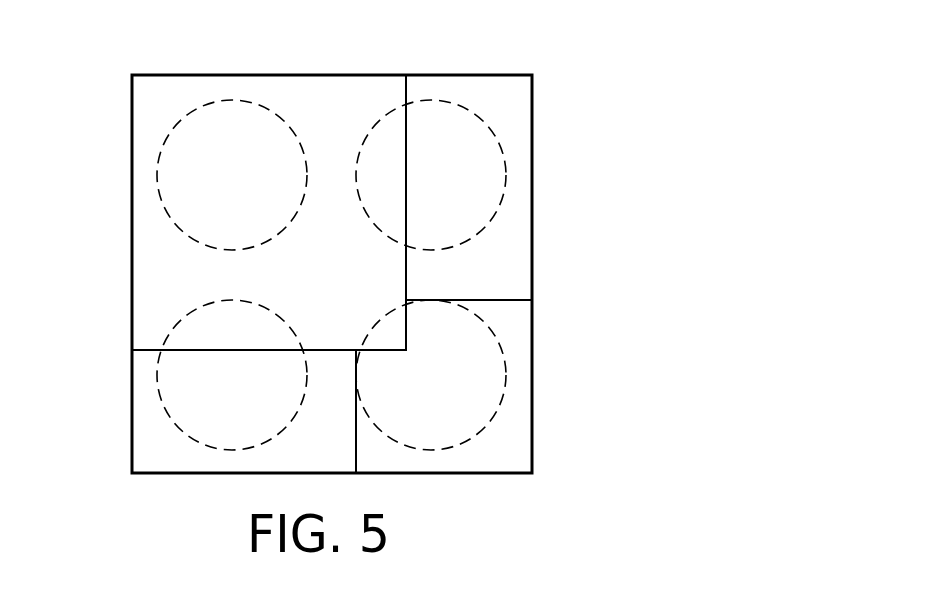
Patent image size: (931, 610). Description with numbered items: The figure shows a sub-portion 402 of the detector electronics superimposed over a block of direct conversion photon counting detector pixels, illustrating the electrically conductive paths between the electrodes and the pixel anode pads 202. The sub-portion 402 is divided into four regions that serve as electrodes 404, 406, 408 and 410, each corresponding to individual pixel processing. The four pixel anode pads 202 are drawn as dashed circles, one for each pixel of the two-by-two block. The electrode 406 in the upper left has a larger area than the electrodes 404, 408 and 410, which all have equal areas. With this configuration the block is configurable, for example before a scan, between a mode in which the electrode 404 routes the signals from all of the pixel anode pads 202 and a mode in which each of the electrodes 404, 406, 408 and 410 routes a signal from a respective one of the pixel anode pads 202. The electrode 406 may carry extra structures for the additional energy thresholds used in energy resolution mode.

The sub-portion of the electronics 402 is at (541, 93).
The electrode 404 is at (532, 193).
The electrode 406 is at (132, 194).
The electrode 408 is at (132, 385).
The electrode 410 is at (532, 384).
The pixel anode pads 202 is at (331, 275).